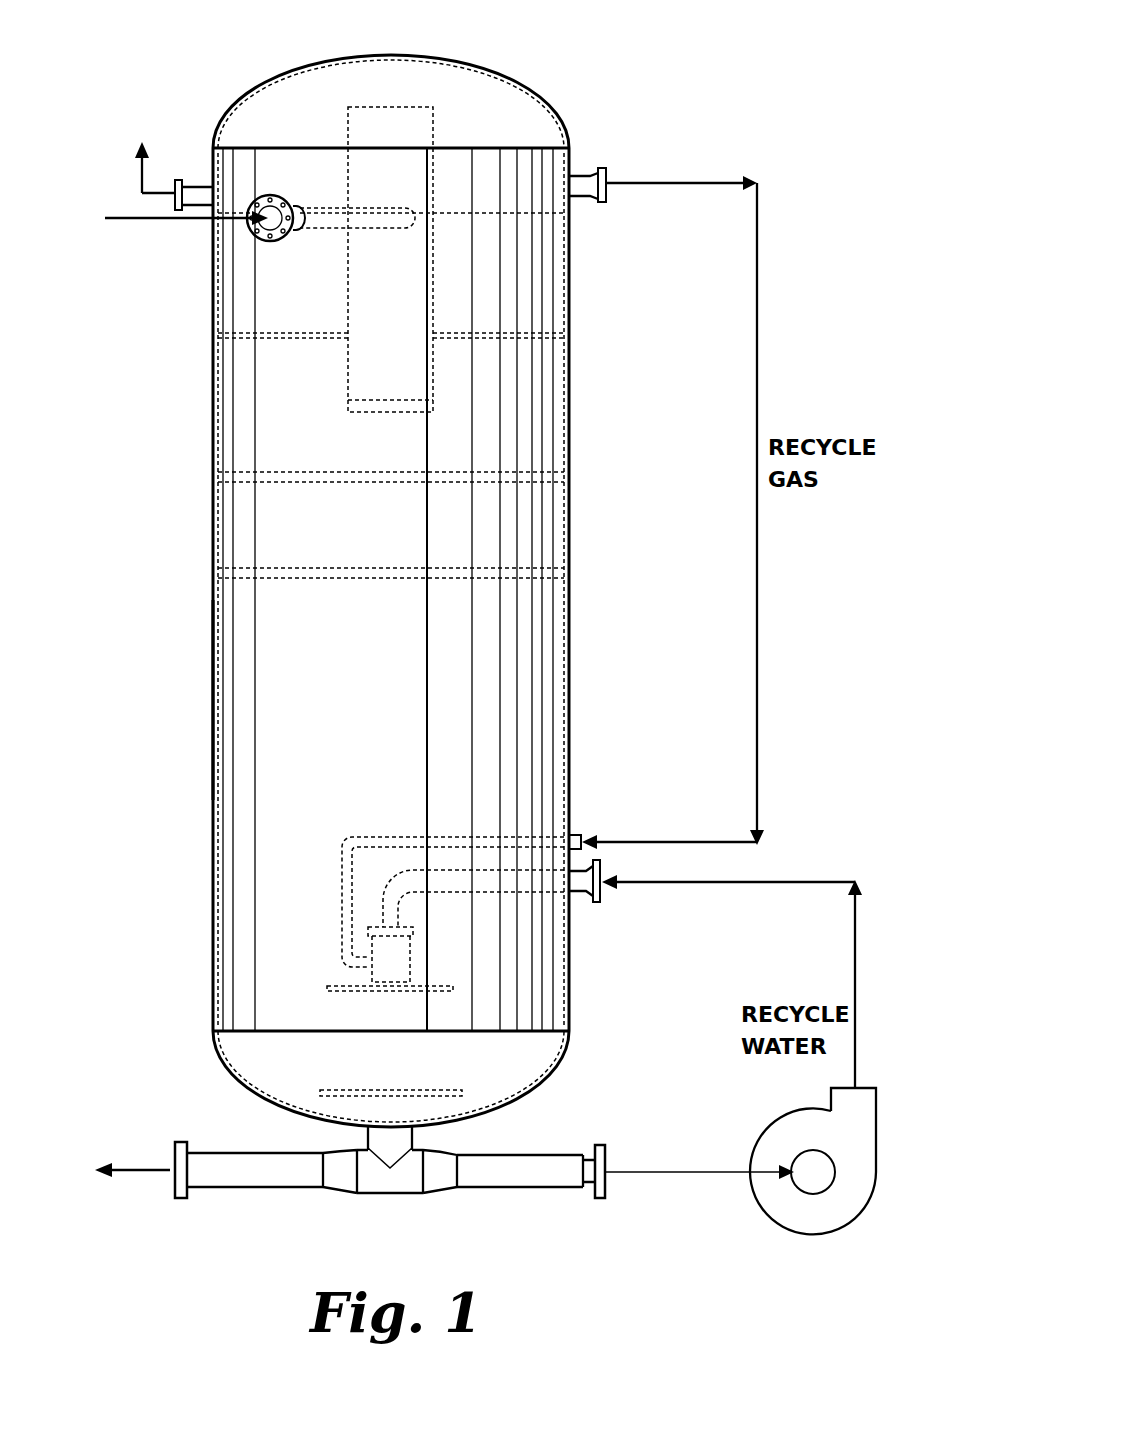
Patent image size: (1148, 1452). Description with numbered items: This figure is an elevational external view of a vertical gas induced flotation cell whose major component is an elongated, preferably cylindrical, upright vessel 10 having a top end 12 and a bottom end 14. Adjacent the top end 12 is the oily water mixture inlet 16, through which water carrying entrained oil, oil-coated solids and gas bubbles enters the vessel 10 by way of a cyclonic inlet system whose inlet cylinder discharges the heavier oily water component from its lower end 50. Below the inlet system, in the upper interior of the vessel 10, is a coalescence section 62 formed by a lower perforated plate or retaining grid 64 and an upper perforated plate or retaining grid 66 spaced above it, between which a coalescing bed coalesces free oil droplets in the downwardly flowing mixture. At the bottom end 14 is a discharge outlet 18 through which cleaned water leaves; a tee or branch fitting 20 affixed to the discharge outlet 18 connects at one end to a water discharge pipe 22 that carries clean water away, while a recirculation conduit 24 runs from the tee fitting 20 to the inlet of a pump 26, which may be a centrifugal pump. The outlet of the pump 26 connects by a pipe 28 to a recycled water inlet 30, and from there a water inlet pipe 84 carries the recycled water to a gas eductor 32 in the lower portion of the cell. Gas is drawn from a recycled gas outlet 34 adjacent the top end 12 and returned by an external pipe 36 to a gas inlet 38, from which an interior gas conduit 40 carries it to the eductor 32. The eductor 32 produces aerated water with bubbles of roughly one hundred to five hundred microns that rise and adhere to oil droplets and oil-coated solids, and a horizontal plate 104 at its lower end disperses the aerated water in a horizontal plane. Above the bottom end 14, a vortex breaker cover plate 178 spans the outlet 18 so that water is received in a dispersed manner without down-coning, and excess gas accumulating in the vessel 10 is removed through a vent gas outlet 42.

The vessel 10 is at (572, 513).
The top end 12 is at (417, 53).
The bottom end 14 is at (440, 1135).
The oily water mixture inlet 16 is at (258, 225).
The discharge outlet 18 is at (383, 1145).
The tee or branch fitting 20 is at (393, 1185).
The water discharge pipe 22 is at (265, 1178).
The recirculation conduit 24 is at (510, 1180).
The pump 26 is at (824, 1215).
The pipe 28 is at (855, 968).
The recycled water inlet 30 is at (600, 900).
The eductor 32 is at (420, 978).
The recycled gas outlet 34 is at (607, 175).
The pipe 36 is at (757, 633).
The gas inlet 38 is at (582, 832).
The gas conduit 40 is at (340, 870).
The vent gas outlet 42 is at (190, 185).
The lower end of cylinder 50 is at (200, 690).
The coalescence section 62 is at (198, 528).
The lower perforated plate or retaining grid 64 is at (245, 580).
The upper perforated plate or retaining grid 66 is at (245, 470).
The water inlet pipe 84 is at (480, 892).
The horizontal plate 104 is at (410, 990).
The vortex breaker cover plate 178 is at (333, 1092).